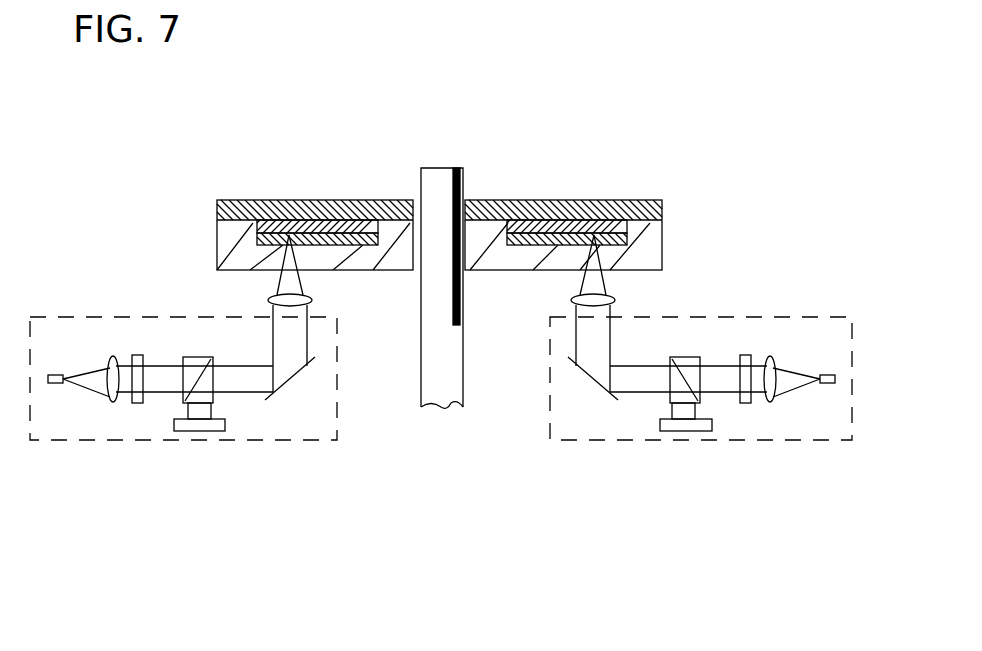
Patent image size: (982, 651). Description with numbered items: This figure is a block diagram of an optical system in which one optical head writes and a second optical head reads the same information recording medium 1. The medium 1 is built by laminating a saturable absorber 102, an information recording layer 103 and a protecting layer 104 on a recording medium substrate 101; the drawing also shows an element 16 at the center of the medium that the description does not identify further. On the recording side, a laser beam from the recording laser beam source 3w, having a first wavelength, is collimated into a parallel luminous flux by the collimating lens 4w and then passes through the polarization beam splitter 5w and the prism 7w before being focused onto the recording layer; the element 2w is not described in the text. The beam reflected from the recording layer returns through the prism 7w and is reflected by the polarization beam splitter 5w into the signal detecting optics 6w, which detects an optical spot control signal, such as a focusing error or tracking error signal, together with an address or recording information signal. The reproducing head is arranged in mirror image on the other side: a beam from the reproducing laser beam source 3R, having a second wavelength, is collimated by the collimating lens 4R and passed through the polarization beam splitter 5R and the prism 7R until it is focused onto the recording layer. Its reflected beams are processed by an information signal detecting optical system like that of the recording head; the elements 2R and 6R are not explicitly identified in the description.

The information recording medium 1 is at (340, 194).
The rotating shaft 16 is at (440, 204).
The recording medium substrate 101 is at (640, 262).
The saturable absorber 102 is at (635, 240).
The information recording layer 103 is at (620, 222).
The protecting layer 104 is at (662, 205).
The objective lens (write) 2w is at (310, 298).
The recording laser beam source 3w is at (62, 384).
The collimating lens 4w is at (113, 401).
The polarization beam splitter 5w is at (137, 355).
The signal detecting optics 6w is at (201, 360).
The prism 7w is at (215, 432).
The objective lens (read) 2R is at (612, 302).
The reproducing laser beam source 3R is at (836, 383).
The collimating lens 4R is at (774, 400).
The polarization beam splitter 5R is at (748, 358).
The beam splitter / mirror (read) 6R is at (597, 382).
The prism 7R is at (701, 432).